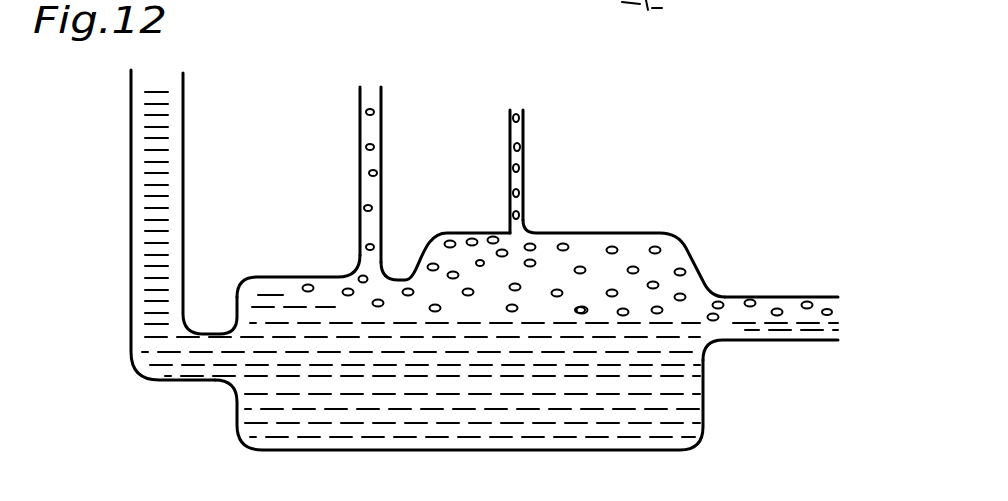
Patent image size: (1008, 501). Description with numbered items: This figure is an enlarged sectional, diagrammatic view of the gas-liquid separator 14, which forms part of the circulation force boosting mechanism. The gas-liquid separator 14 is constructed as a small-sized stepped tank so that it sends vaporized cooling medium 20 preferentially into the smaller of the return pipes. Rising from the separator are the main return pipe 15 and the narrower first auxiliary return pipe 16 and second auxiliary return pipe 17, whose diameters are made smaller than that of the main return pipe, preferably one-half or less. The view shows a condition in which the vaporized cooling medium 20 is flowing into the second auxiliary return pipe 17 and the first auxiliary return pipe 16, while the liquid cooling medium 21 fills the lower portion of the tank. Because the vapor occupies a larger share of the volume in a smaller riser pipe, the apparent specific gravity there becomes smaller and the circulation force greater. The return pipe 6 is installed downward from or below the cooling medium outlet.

The main return pipe 15 is at (184, 123).
The first auxiliary return pipe 16 is at (382, 131).
The second auxiliary return pipe 17 is at (524, 138).
The vaporized cooling medium 20 is at (638, 243).
The return pipe 6 is at (778, 350).
The liquid 21 is at (704, 405).
The gas-liquid separator 14 is at (440, 455).